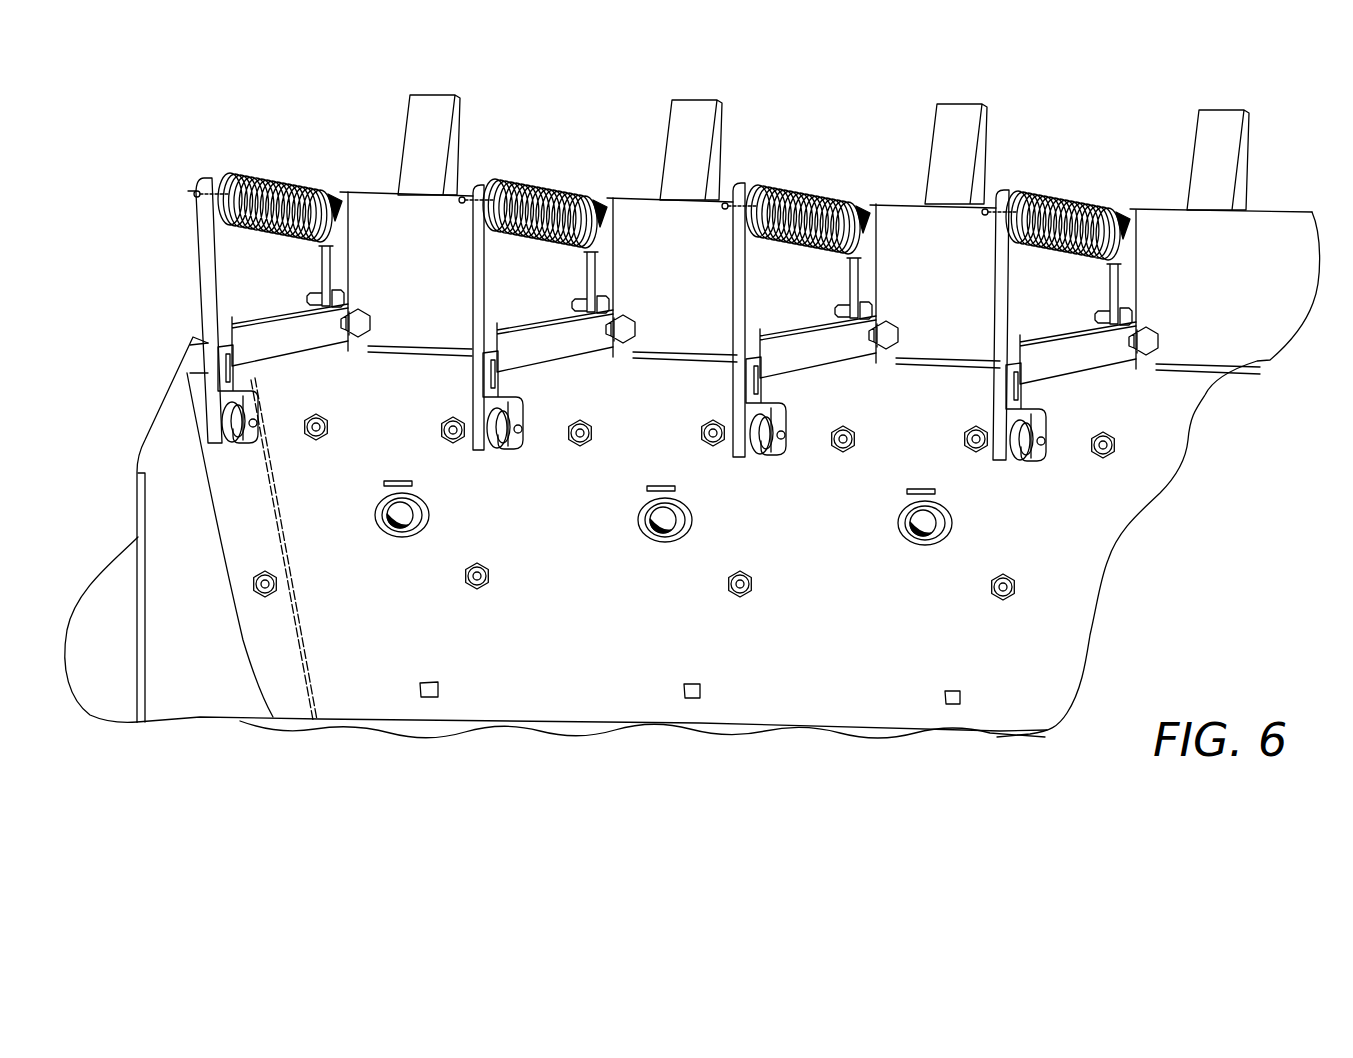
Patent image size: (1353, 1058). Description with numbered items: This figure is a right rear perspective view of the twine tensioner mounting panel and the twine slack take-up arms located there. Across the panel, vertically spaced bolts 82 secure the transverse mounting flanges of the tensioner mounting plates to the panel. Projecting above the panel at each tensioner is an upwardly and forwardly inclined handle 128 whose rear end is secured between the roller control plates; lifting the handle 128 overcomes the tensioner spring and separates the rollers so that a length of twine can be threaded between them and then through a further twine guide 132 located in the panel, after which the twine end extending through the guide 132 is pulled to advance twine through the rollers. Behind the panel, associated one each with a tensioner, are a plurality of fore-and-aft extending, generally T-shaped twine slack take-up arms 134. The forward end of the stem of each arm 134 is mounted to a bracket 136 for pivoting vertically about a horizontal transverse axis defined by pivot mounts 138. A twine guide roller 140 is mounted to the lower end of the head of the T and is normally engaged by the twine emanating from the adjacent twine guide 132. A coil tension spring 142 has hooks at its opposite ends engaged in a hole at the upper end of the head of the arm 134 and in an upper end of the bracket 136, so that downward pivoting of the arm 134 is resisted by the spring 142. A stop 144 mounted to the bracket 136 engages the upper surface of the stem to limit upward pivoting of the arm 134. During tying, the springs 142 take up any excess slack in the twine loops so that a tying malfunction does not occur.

The bolts 82 is at (440, 430).
The handle 128 is at (462, 116).
The twine guide 132 is at (424, 522).
The twine slack take-up arm 134 is at (273, 335).
The bracket 136 is at (343, 240).
The pivot mounts 138 is at (368, 323).
The twine guide roller 140 is at (233, 443).
The coil tension spring 142 is at (283, 178).
The stop 144 is at (340, 295).